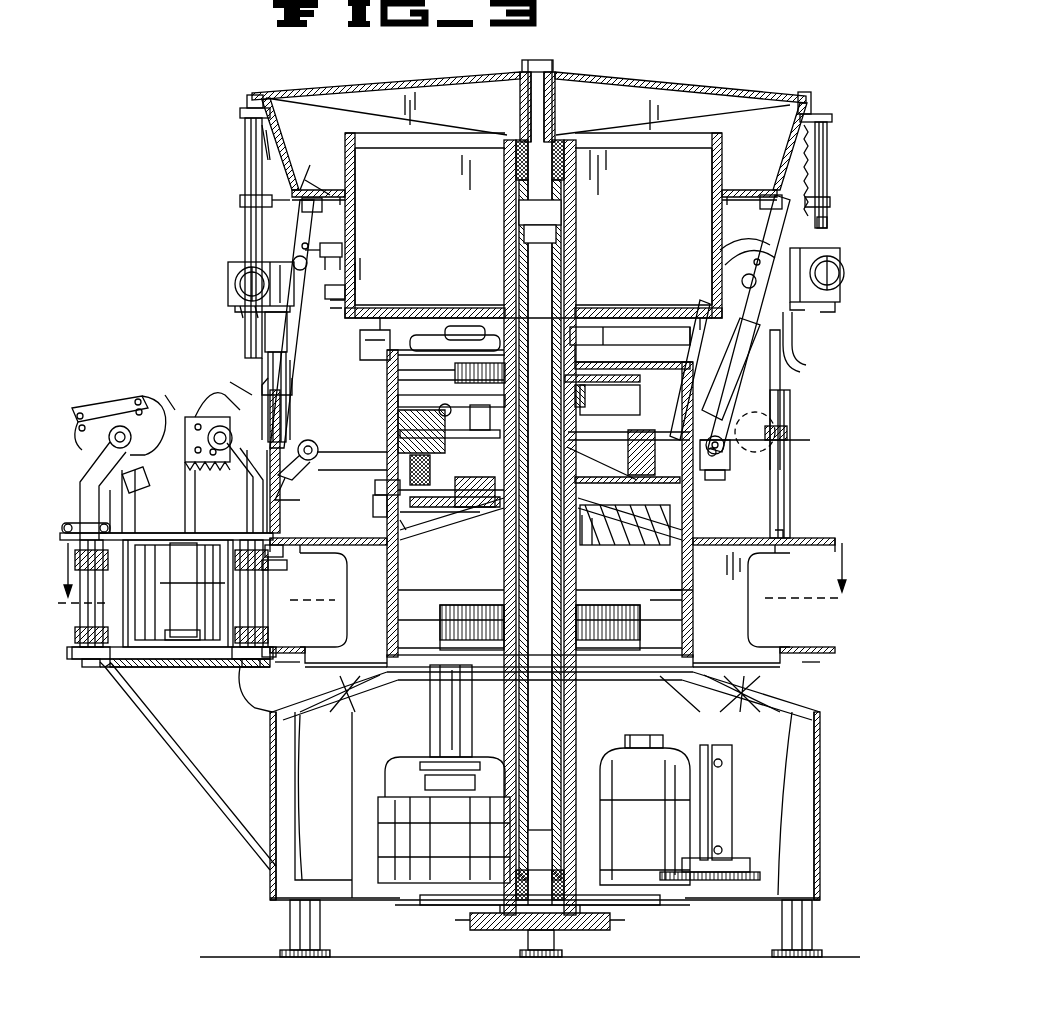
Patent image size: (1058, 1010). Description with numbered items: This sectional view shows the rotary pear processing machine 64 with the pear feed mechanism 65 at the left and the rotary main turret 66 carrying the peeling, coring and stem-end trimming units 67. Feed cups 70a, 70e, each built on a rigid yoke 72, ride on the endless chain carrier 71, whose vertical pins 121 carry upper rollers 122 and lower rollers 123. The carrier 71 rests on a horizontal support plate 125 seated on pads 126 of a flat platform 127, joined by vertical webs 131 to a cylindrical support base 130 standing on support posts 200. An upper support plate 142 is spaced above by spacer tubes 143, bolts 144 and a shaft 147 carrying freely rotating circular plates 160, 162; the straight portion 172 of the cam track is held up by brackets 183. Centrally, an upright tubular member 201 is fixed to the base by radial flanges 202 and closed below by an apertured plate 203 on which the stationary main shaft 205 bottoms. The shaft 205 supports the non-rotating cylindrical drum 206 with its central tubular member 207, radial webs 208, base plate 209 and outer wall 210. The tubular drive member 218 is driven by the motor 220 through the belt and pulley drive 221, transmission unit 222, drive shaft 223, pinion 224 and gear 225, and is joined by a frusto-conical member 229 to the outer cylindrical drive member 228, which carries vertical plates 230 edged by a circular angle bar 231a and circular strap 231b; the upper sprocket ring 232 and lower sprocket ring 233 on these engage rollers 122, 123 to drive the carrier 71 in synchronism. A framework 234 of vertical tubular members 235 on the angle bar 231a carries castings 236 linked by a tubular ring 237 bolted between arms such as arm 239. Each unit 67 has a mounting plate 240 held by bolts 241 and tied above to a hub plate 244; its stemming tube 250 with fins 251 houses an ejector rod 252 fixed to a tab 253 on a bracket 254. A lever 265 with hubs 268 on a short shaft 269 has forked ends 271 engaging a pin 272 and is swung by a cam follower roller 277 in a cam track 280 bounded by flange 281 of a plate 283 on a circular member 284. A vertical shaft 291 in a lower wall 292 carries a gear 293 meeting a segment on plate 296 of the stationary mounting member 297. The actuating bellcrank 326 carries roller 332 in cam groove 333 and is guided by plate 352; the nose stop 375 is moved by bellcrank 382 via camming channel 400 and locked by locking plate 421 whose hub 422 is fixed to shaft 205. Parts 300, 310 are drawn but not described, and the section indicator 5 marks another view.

The rotary pear processing machine 64 is at (215, 112).
The pear feed mechanism 65 is at (162, 388).
The rotary main turret 66 is at (240, 170).
The peeling, coring and stem-end trimming unit 67 is at (225, 372).
The feed cup 70a is at (112, 412).
The feed cup 70e is at (213, 415).
The endless chain carrier 71 is at (100, 665).
The rigid yoke 72 is at (255, 492).
The vertical pin 121 is at (272, 605).
The upper roller 122 is at (272, 558).
The lower roller 123 is at (280, 648).
The horizontal support plate 125 is at (170, 615).
The pad 126 is at (125, 667).
The flat platform 127 is at (220, 667).
The cylindrical support base 130 is at (270, 776).
The vertical web 131 is at (230, 746).
The upper support plate 142 is at (178, 550).
The vertical spacer tube 143 is at (180, 584).
The bolt 144 is at (138, 532).
The shaft 147 is at (170, 628).
The circular plate 160 is at (275, 572).
The lower circular plate 162 is at (245, 675).
The straight portion of cam track 172 is at (155, 500).
The bracket 183 is at (125, 515).
The support post 200 is at (290, 924).
The upright tubular member 201 is at (578, 720).
The radially extending flange 202 is at (365, 755).
The apertured plate 203 is at (570, 920).
The main shaft 205 is at (562, 196).
The cylindrical drum 206 is at (357, 190).
The central tubular member 207 is at (504, 182).
The radial web 208 is at (455, 221).
The base plate 209 is at (620, 310).
The outer wall 210 is at (348, 203).
The tubular drive member 218 is at (580, 560).
The motor 220 is at (657, 825).
The belt and pulley drive 221 is at (430, 905).
The transmission unit 222 is at (472, 825).
The drive shaft 223 is at (425, 778).
The pinion 224 is at (460, 650).
The gear 225 is at (620, 630).
The outer cylindrical drive member 228 is at (725, 590).
The frusto-conical member 229 is at (602, 527).
The vertical plate 230 is at (400, 588).
The circular angle bar 231a is at (285, 538).
The circular strap 231b is at (335, 656).
The upper sprocket ring 232 is at (332, 565).
The lower sprocket ring 233 is at (278, 663).
The framework 234 is at (265, 326).
The vertical tubular member 235 is at (790, 457).
The casting 236 is at (792, 222).
The tubular ring 237 is at (230, 275).
The arm 239 is at (248, 305).
The vertical mounting plate 240 is at (680, 468).
The bolt 241 is at (375, 502).
The hub plate 244 is at (612, 364).
The stemming tube 250 is at (316, 440).
The fin 251 is at (265, 384).
The stationary ejector rod 252 is at (495, 428).
The tab 253 is at (450, 428).
The bracket 254 is at (500, 470).
The lever 265 is at (292, 340).
The hub 268 is at (735, 235).
The short shaft 269 is at (730, 250).
The forked end portion 271 is at (305, 462).
The pin 272 is at (318, 450).
The cam follower roller 277 is at (290, 215).
The cam track 280 is at (325, 213).
The flange 281 is at (240, 198).
The horizontal plate 283 is at (330, 163).
The circular member 284 is at (345, 150).
The vertical shaft 291 is at (395, 470).
The lower wall 292 is at (635, 445).
The gear 293 is at (712, 482).
The plate 296 is at (625, 485).
The stationary circular mounting member 297 is at (615, 537).
The seal 300 is at (434, 473).
The baffle plate 310 is at (418, 528).
The actuating bellcrank 326 is at (290, 358).
The roller 332 is at (345, 265).
The cam groove 333 is at (345, 250).
The plate 352 is at (318, 330).
The nose stop 375 is at (788, 436).
The bellcrank 382 is at (795, 360).
The stationary camming channel 400 is at (345, 295).
The locking plate 421 is at (498, 392).
The hub 422 is at (574, 396).
The section line 5- 5 is at (453, 587).